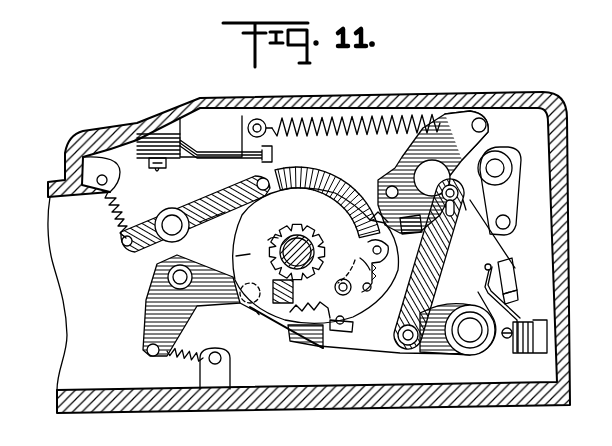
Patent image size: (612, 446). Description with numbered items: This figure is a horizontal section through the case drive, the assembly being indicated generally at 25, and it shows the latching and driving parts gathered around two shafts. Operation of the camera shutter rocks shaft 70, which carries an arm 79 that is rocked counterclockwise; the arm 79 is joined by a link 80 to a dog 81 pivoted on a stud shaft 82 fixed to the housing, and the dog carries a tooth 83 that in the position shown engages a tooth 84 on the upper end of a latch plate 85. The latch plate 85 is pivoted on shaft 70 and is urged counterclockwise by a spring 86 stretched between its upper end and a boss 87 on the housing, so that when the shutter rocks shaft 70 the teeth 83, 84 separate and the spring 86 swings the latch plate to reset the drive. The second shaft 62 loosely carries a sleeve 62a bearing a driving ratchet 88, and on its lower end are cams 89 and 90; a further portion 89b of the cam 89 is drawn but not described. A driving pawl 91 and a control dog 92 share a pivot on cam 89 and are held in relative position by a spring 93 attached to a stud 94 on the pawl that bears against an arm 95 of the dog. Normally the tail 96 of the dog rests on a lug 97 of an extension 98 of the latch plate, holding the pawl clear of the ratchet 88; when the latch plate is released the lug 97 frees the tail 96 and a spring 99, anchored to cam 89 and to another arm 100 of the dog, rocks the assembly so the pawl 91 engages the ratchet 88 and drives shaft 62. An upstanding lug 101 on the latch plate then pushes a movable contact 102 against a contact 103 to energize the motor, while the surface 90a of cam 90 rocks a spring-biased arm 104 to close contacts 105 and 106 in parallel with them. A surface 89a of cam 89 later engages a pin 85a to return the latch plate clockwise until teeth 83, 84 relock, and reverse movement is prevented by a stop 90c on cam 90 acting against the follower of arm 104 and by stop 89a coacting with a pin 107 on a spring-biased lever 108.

The lock mechanism housing 25 is at (196, 84).
The shaft 62 is at (301, 241).
The sleeve 62a is at (312, 234).
The shaft 70 is at (473, 335).
The arm 79 is at (451, 340).
The link 80 is at (423, 283).
The dog 81 is at (477, 203).
The stud shaft 82 is at (500, 168).
The tooth 83 is at (432, 162).
The tooth 84 is at (446, 178).
The latch plate 85 is at (480, 248).
The pin 85a is at (401, 176).
The spring 86 is at (360, 116).
The boss 87 is at (258, 118).
The driving ratchet 88 is at (270, 241).
The cam 89 is at (238, 255).
The cam surface 89a is at (412, 226).
The cam notch 89b is at (390, 195).
The cam 90 is at (316, 232).
The cam surface 90a is at (206, 224).
The stop 90c is at (300, 180).
The driving pawl 91 is at (273, 283).
The control dog 92 is at (366, 263).
The spring 93 is at (310, 315).
The stud 94 is at (275, 303).
The arm 95 is at (288, 326).
The tail 96 is at (333, 330).
The lug 97 is at (312, 342).
The extension 98 is at (340, 346).
The spring 99 is at (370, 292).
The arm 100 is at (368, 246).
The upstanding lug 101 is at (511, 286).
The movable contact 102 is at (506, 268).
The contact 103 is at (496, 273).
The spring-biased arm 104 is at (213, 199).
The contact 105 is at (282, 159).
The contact 106 is at (262, 153).
The pin 107 is at (243, 305).
The spring-biased lever 108 is at (158, 312).